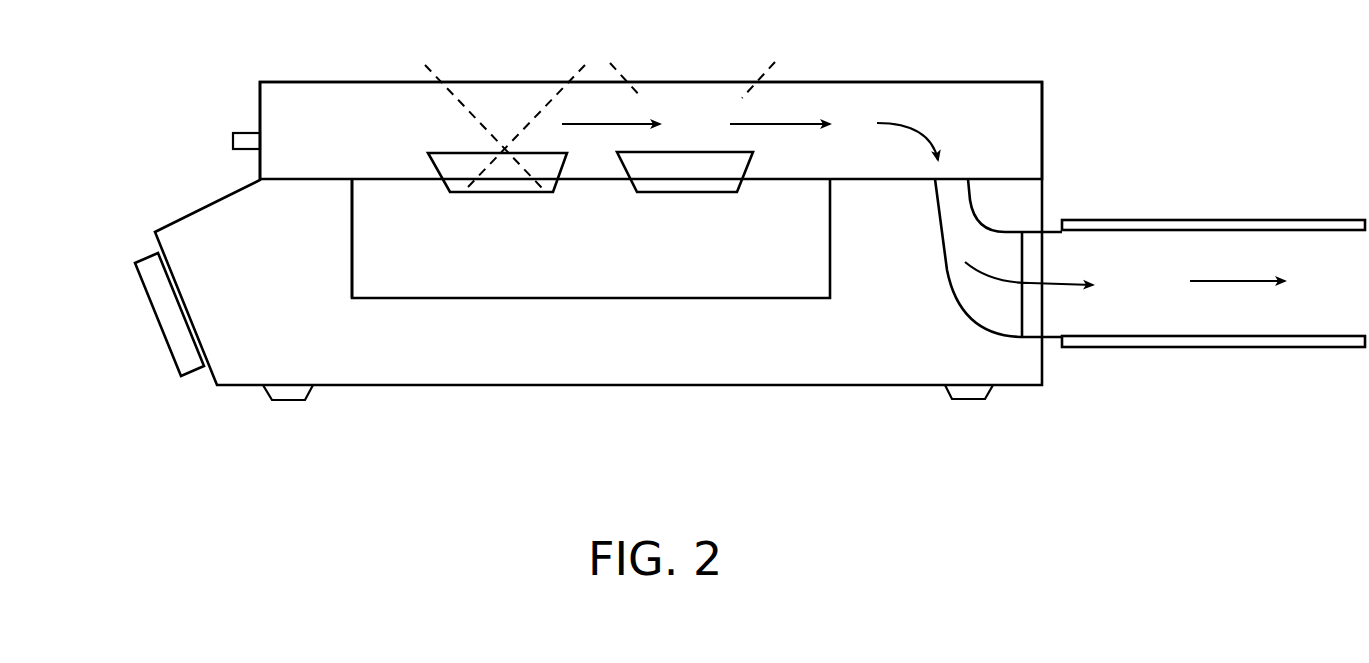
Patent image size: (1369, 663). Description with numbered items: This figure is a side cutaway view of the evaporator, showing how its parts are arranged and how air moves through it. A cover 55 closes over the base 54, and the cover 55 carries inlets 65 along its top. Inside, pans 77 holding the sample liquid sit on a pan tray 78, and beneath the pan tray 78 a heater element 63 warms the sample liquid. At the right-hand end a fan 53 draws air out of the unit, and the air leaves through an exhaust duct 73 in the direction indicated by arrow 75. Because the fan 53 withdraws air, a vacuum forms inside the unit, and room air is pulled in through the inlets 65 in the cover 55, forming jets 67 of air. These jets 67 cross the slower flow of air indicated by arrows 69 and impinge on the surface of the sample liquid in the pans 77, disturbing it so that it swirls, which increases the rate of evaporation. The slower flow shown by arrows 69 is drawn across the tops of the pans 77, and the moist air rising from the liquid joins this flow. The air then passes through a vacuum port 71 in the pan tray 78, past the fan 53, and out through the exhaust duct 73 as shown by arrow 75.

The fan 53 is at (1030, 327).
The base 54 is at (507, 385).
The cover 55 is at (283, 83).
The heater element 63 is at (602, 298).
The inlets 65 is at (445, 78).
The jets 67 is at (555, 100).
The arrows 69 is at (795, 125).
The vacuum port 71 is at (963, 182).
The exhaust duct 73 is at (1235, 220).
The arrow 75 is at (1232, 280).
The pans 77 is at (520, 193).
The pan tray 78 is at (365, 180).